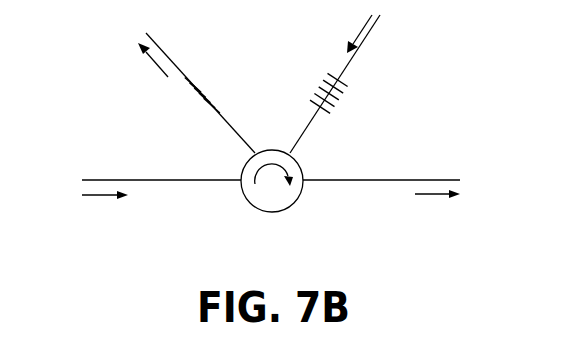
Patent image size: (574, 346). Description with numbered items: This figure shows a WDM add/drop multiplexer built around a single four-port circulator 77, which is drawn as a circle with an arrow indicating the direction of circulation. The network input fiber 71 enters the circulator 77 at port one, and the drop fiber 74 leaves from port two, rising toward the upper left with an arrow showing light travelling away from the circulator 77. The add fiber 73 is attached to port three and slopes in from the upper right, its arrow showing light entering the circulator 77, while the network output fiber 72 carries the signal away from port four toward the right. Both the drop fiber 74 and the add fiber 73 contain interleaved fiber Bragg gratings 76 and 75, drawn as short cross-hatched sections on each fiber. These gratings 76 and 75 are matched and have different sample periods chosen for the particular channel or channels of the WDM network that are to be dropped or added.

The network input fiber 71 is at (115, 180).
The network output fiber 72 is at (403, 180).
The add fiber 73 is at (362, 43).
The drop fiber 74 is at (166, 55).
The interleaved fiber Bragg gratings 75 is at (338, 100).
The interleaved fiber Bragg gratings 76 is at (203, 82).
The circulator 77 is at (278, 212).